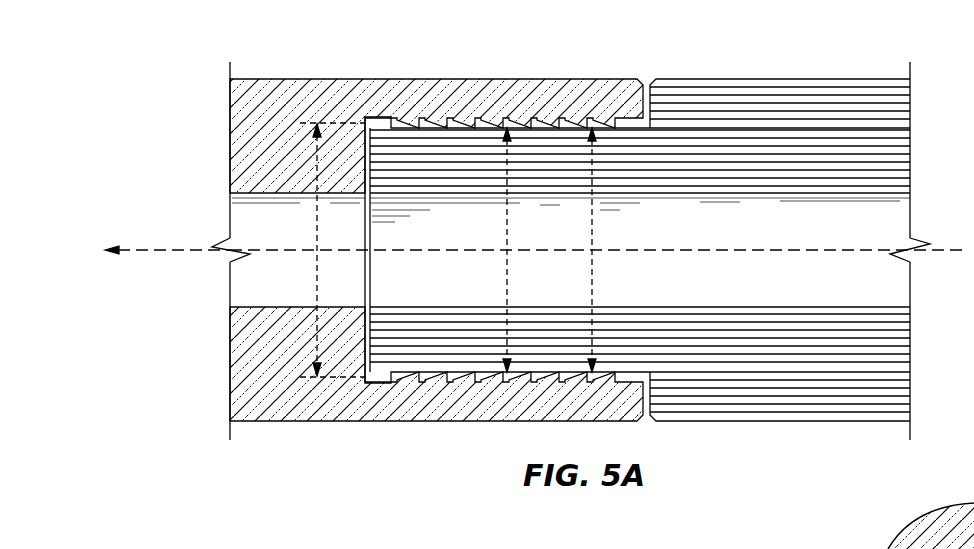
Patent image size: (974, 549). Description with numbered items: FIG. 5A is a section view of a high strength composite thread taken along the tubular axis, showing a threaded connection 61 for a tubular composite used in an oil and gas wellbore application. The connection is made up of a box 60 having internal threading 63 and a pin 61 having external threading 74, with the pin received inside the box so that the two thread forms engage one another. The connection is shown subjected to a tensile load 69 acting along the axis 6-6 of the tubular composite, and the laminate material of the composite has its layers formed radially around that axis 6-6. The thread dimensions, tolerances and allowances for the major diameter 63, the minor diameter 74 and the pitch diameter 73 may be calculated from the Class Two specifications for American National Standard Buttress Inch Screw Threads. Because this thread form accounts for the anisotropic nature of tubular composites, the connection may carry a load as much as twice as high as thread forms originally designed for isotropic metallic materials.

The box 60 is at (500, 79).
The pin 61 is at (757, 79).
The internal threading 63 is at (507, 262).
The pitch diameter 73 is at (318, 268).
The external threading 74 is at (592, 240).
The tensile load 69 is at (150, 250).
The axis 6 is at (285, 250).